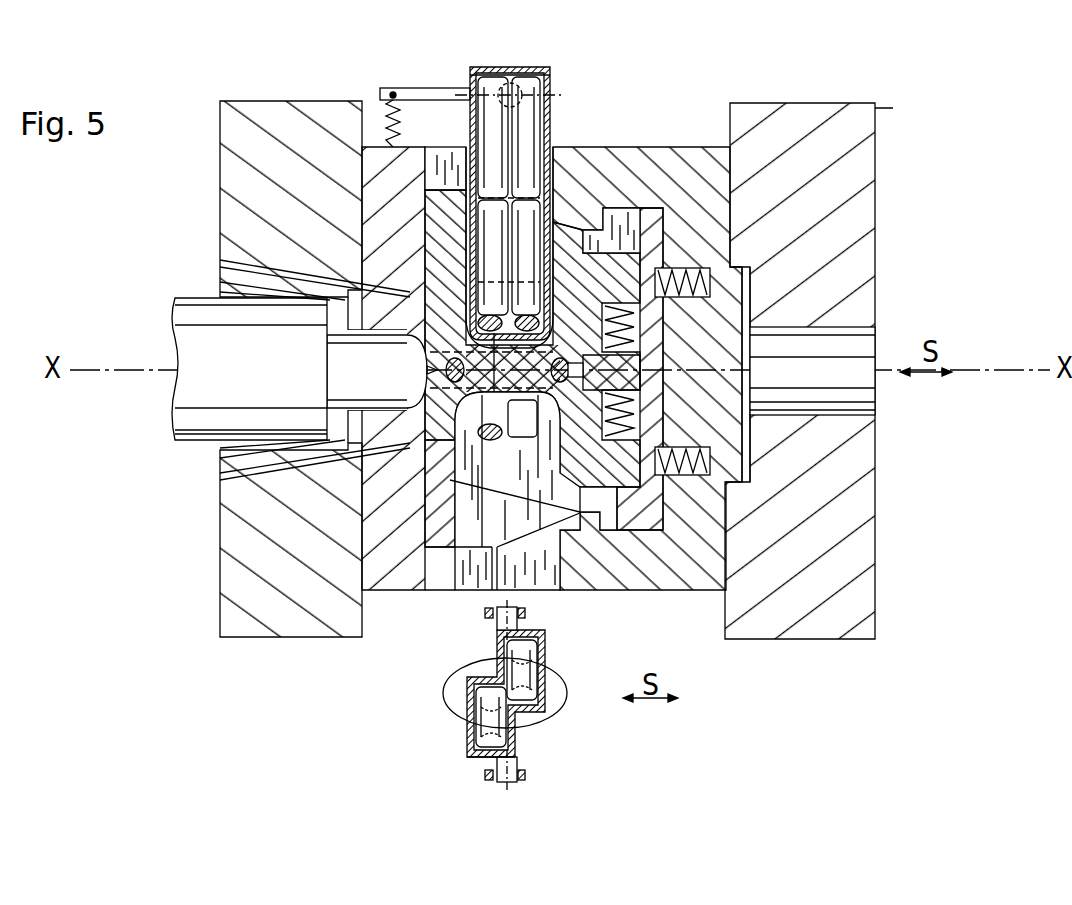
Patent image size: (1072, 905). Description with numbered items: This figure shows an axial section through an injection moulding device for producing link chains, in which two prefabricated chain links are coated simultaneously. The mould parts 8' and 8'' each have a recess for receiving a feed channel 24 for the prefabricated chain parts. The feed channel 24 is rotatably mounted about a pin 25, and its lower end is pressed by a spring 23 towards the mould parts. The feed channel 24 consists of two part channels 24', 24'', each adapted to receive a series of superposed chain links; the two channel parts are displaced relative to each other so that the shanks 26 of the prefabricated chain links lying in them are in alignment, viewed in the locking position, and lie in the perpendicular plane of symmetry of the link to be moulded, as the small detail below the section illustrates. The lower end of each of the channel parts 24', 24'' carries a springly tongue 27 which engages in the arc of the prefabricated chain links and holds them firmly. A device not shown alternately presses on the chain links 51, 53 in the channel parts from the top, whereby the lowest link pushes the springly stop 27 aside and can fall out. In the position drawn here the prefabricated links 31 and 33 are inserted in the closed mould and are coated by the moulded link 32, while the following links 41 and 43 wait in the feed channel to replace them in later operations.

The spring 23 is at (383, 118).
The mould part 8' is at (426, 122).
The chain link 43 is at (468, 165).
The chain link 53 is at (495, 98).
The chain link 51 is at (520, 88).
The pin 25 is at (547, 80).
The feed channel 24 is at (494, 390).
The chain link 41 is at (585, 235).
The springly tongue 27 is at (430, 305).
The link 32 is at (483, 358).
The prefabricated chain link 33 is at (483, 437).
The prefabricated chain link 31 is at (512, 467).
The mould part 8'' is at (380, 496).
The part channel 24' is at (572, 670).
The part channel 24'' is at (438, 716).
The shanks 26 is at (467, 740).